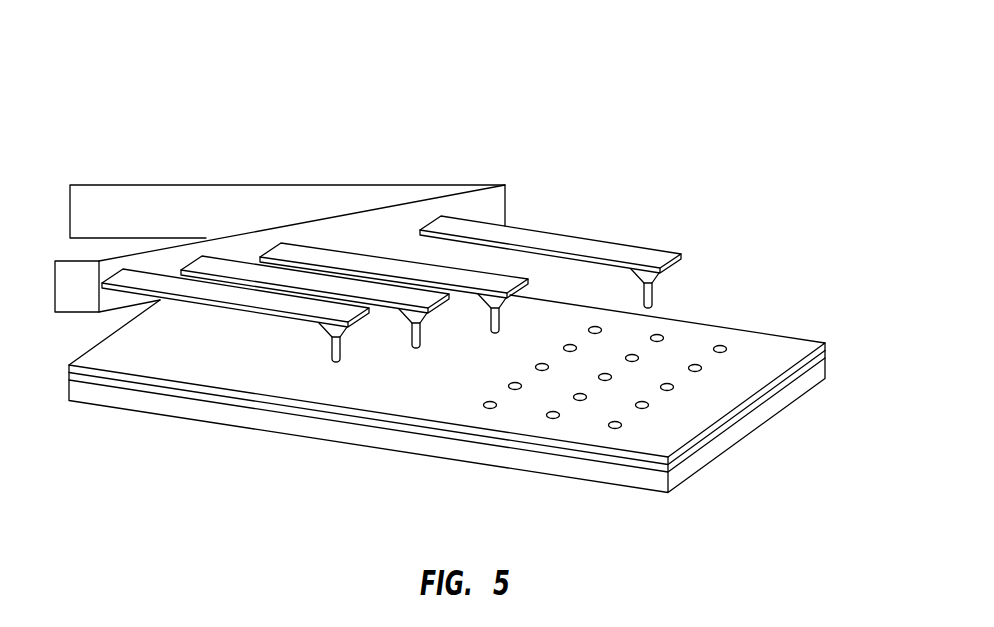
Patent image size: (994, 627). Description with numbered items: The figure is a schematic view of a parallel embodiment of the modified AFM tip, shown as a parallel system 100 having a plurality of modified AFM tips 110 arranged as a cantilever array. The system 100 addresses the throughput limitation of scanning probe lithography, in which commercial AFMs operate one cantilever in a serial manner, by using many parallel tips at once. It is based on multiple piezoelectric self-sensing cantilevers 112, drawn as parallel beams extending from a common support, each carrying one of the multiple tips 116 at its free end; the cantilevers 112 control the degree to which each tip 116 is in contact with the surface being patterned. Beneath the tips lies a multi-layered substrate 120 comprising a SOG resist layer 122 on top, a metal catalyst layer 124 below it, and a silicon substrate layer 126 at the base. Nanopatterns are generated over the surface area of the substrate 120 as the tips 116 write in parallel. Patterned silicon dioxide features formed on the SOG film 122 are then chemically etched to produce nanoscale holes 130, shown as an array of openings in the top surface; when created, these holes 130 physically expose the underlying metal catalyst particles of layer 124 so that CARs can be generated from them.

The parallel system 100 is at (708, 168).
The modified AFM tips 110 is at (702, 257).
The piezoelectric self-sensing cantilevers 112 is at (540, 235).
The tips 116 is at (654, 292).
The multi-layered substrate 120 is at (163, 436).
The SOG resist layer 122 is at (770, 388).
The metal catalyst layer 124 is at (723, 430).
The silicon substrate layer 126 is at (683, 474).
The nanoscale holes 130 is at (547, 414).